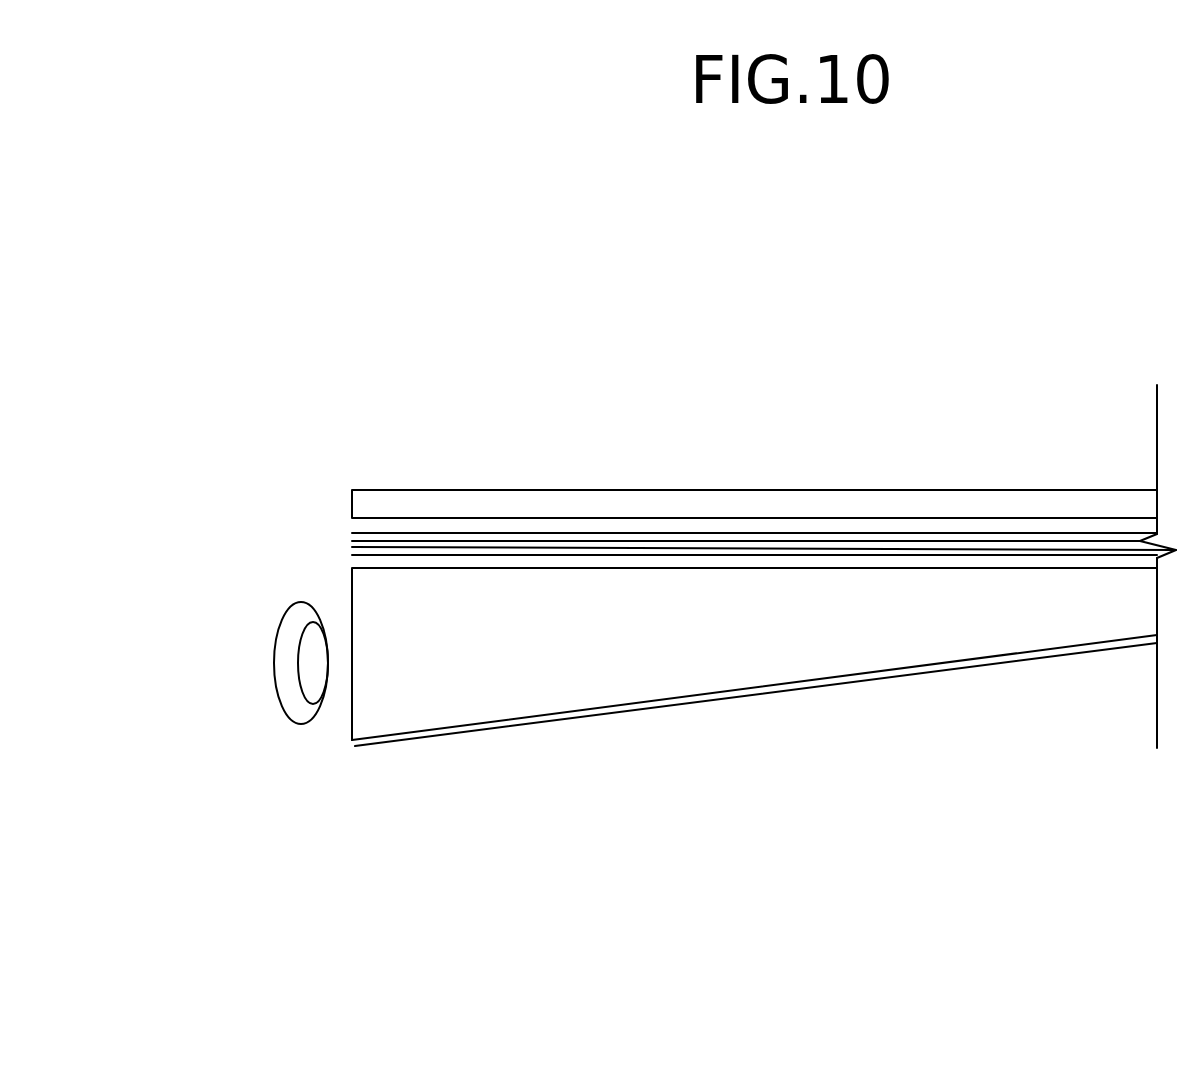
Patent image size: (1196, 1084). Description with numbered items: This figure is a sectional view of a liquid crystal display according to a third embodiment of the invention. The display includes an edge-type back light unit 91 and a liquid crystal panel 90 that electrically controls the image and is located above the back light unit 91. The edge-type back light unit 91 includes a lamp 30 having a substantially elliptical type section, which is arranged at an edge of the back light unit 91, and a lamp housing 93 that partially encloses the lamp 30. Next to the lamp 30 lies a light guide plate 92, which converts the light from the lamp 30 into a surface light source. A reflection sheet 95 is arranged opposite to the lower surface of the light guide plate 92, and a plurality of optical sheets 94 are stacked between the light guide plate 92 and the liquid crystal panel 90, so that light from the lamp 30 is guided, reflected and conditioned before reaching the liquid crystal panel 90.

The liquid crystal panel 90 is at (372, 509).
The optical sheets 94 is at (340, 532).
The edge-type back light unit 91 is at (240, 562).
The lamp housing 93 is at (295, 724).
The lamp 30 is at (312, 677).
The light guide plate 92 is at (498, 703).
The reflection sheet 95 is at (610, 712).